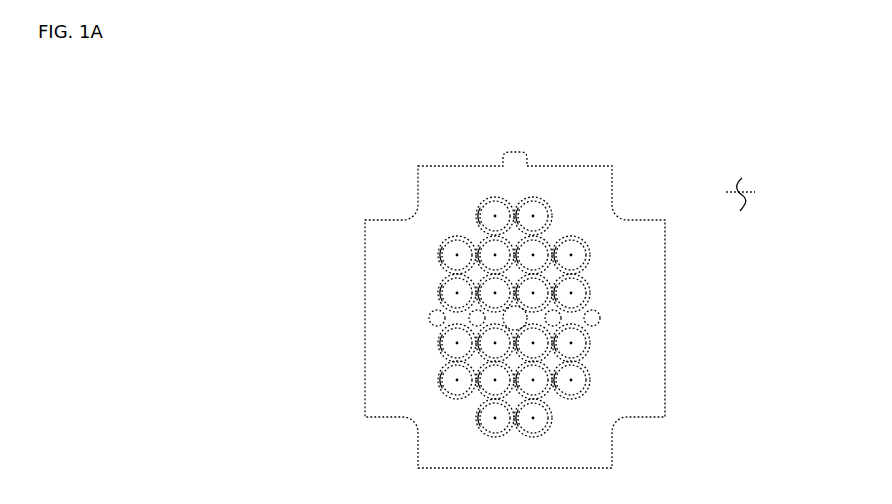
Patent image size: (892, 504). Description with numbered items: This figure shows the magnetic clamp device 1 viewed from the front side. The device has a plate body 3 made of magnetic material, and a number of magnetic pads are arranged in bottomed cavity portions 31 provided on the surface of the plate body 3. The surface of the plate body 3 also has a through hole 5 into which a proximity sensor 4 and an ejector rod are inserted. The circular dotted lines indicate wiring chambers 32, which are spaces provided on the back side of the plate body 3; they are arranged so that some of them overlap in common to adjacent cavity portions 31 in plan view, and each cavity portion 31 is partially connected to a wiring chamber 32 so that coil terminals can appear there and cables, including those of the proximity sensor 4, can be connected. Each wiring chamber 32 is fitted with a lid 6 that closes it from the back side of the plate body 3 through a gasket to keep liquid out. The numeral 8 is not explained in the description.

The magnetic clamp device 1 is at (740, 194).
The plate body 3 is at (583, 242).
The cavity portion 31 is at (584, 289).
The wiring chamber 32 is at (498, 206).
The proximity sensor 4 is at (429, 317).
The through hole 5 is at (590, 338).
The lid 6 is at (446, 293).
The battery cell 8 is at (536, 216).